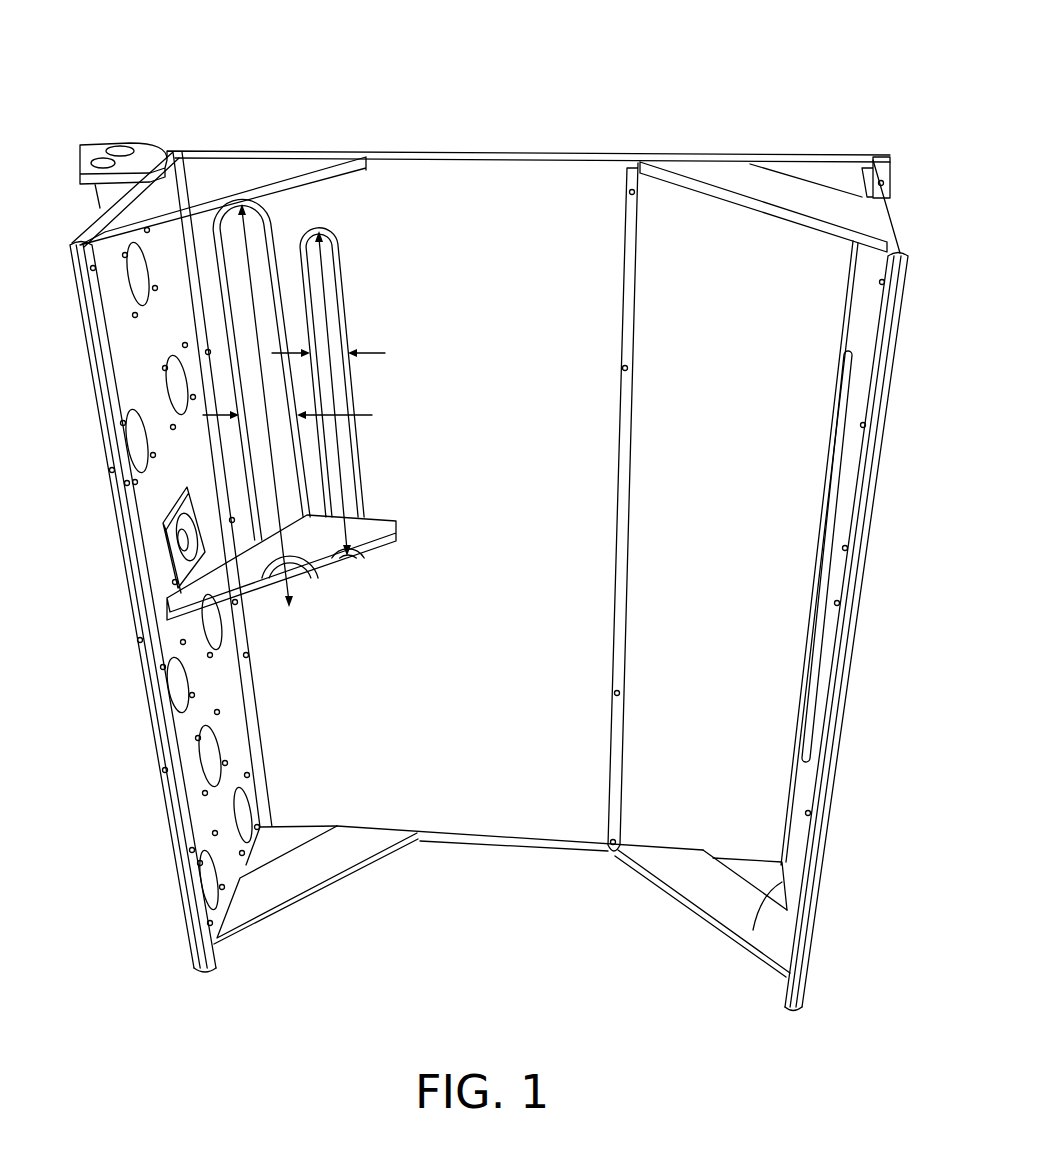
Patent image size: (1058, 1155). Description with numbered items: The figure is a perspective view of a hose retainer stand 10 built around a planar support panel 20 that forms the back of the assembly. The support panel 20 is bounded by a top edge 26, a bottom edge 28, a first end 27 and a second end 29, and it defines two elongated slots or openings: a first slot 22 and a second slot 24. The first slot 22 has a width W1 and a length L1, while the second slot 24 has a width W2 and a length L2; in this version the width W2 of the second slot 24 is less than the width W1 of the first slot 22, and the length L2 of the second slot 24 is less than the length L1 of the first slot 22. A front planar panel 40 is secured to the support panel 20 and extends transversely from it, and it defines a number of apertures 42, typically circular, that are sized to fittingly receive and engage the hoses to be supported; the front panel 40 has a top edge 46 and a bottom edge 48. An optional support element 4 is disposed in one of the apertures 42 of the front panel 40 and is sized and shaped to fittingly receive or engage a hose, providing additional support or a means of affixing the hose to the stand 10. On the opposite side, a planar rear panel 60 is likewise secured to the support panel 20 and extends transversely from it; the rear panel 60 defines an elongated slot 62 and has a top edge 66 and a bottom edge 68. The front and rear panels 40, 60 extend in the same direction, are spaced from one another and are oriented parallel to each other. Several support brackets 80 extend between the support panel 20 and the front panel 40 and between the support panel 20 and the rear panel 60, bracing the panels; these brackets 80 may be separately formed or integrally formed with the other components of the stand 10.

The hose retainer stand 10 is at (70, 96).
The planar support panel 20 is at (477, 185).
The first elongated slot 22 is at (273, 265).
The second elongated slot 24 is at (340, 310).
The top edge 26 is at (590, 153).
The first end 27 is at (178, 140).
The bottom edge 28 is at (490, 845).
The second end 29 is at (884, 150).
The front planar panel 40 is at (124, 362).
The apertures 42 is at (145, 437).
The top edge 46 is at (100, 228).
The bottom edge 48 is at (212, 952).
The support element 4 is at (188, 545).
The planar rear panel 60 is at (871, 266).
The slot 62 is at (847, 380).
The top edge 66 is at (905, 242).
The bottom edge 68 is at (765, 952).
The support brackets 80 is at (272, 168).
The length of first slot L1 is at (290, 612).
The length of second slot L2 is at (318, 226).
The width of first slot W1 is at (312, 421).
The width of second slot W2 is at (352, 359).